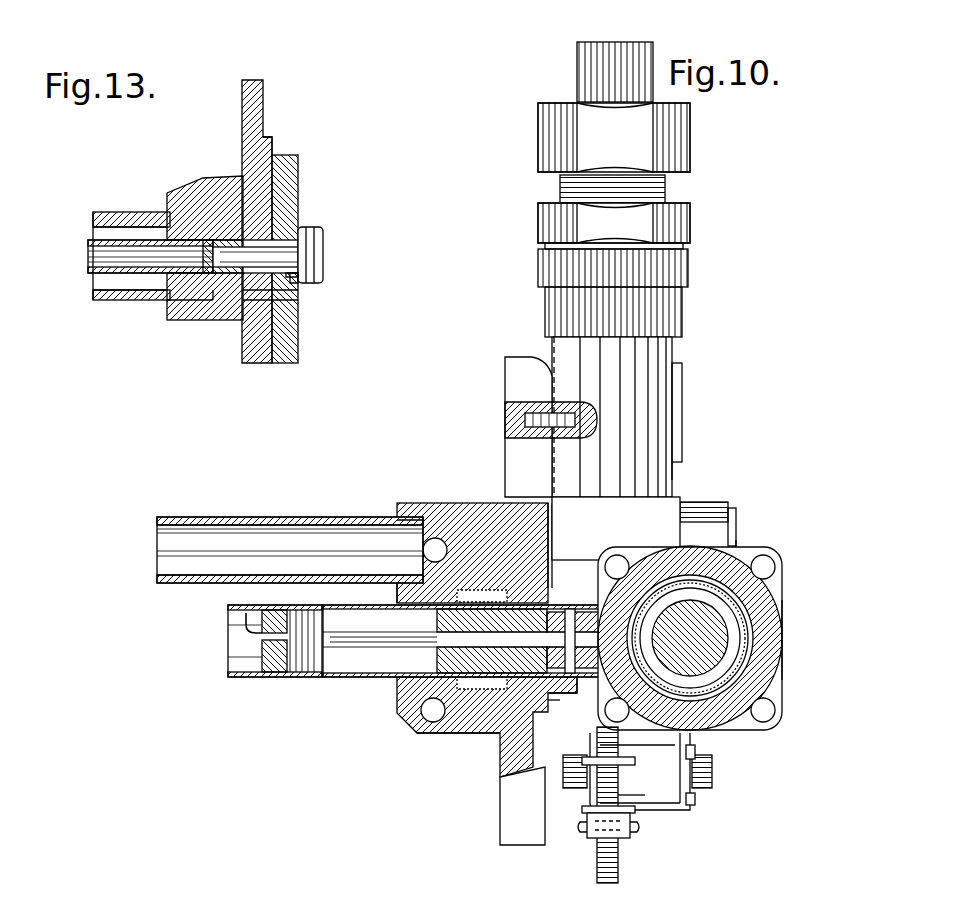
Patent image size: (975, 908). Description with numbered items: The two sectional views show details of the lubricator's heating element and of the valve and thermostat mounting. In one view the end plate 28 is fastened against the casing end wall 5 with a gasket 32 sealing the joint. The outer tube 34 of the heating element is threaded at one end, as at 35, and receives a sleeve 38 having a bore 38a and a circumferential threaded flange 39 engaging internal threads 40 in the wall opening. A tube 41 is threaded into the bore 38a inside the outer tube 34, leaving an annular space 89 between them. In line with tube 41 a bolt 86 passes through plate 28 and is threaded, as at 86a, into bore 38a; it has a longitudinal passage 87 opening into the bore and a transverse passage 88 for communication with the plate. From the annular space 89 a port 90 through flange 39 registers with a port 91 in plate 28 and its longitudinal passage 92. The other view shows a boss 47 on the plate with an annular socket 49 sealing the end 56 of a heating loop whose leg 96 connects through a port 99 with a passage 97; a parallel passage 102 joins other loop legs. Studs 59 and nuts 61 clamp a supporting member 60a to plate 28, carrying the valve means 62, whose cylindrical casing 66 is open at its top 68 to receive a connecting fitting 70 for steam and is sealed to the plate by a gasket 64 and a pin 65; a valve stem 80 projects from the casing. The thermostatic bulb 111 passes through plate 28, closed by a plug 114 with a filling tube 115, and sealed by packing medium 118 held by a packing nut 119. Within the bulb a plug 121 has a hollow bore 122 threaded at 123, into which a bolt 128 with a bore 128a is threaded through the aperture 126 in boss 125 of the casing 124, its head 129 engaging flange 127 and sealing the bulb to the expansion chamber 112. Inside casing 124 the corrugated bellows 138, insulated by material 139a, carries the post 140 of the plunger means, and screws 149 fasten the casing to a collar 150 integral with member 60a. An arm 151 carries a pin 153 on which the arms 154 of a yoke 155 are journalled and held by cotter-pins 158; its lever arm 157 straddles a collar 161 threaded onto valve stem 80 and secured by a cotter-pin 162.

In FIG. 13, the end wall 5 is at (270, 113).
In FIG. 13, the end plate 28 is at (295, 162).
In FIG. 10, the end plate 28 is at (500, 812).
In FIG. 13, the gasket 32 is at (273, 146).
In FIG. 13, the outer tube 34 is at (94, 301).
In FIG. 13, the threaded end 35 is at (166, 302).
In FIG. 13, the sleeve 38 is at (170, 198).
In FIG. 13, the bore 38a is at (190, 226).
In FIG. 13, the circumferential threaded flange 39 is at (273, 222).
In FIG. 13, the internal threads 40 is at (232, 238).
In FIG. 13, the tube 41 is at (90, 242).
In FIG. 13, the bolt 86 is at (314, 260).
In FIG. 13, the threaded portion 86a is at (300, 280).
In FIG. 13, the longitudinal passage 87 is at (200, 321).
In FIG. 13, the transverse passage 88 is at (322, 240).
In FIG. 13, the annular space 89 is at (96, 290).
In FIG. 13, the port 90 is at (226, 321).
In FIG. 13, the port 91 is at (299, 298).
In FIG. 13, the longitudinal passage 92 is at (299, 276).
In FIG. 10, the boss 47 is at (426, 510).
In FIG. 10, the annular socket 49 is at (412, 556).
In FIG. 10, the end of heating tube 56 is at (410, 586).
In FIG. 10, the studs 59 is at (738, 542).
In FIG. 10, the supporting member 60a is at (682, 506).
In FIG. 10, the nuts 61 is at (733, 516).
In FIG. 10, the valve means 62 is at (672, 472).
In FIG. 10, the gasket 64 is at (548, 390).
In FIG. 10, the pin 65 is at (522, 420).
In FIG. 10, the casing 66 is at (645, 376).
In FIG. 10, the top 68 is at (690, 262).
In FIG. 10, the connecting fitting 70 is at (692, 216).
In FIG. 10, the leg 96 is at (240, 530).
In FIG. 10, the passage 97 is at (441, 545).
In FIG. 10, the port 99 is at (362, 522).
In FIG. 10, the passage 102 is at (408, 726).
In FIG. 10, the bulb 111 is at (366, 678).
In FIG. 10, the expansion chamber 112 is at (783, 600).
In FIG. 10, the plug 114 is at (278, 678).
In FIG. 10, the filling tube 115 is at (246, 627).
In FIG. 10, the packing medium 118 is at (446, 735).
In FIG. 10, the packing nut 119 is at (481, 735).
In FIG. 10, the plug 121 is at (440, 650).
In FIG. 10, the hollow bore 122 is at (440, 626).
In FIG. 10, the threaded enlarged end 123 is at (566, 692).
In FIG. 10, the boss 125 is at (620, 602).
In FIG. 10, the aperture 126 is at (590, 602).
In FIG. 10, the flange 127 is at (616, 528).
In FIG. 10, the bolt 128 is at (570, 596).
In FIG. 10, the longitudinal bore 128a is at (582, 700).
In FIG. 10, the head 129 is at (655, 670).
In FIG. 10, the expansible-collapsible element 138 is at (737, 630).
In FIG. 10, the insulating material 139a is at (783, 641).
In FIG. 10, the post 140 is at (712, 660).
In FIG. 10, the screws 149 is at (768, 562).
In FIG. 10, the collar 150 is at (782, 576).
In FIG. 10, the arm 151 is at (690, 746).
In FIG. 10, the casing 124 is at (715, 735).
In FIG. 10, the pin 153 is at (713, 771).
In FIG. 10, the arms 154 is at (700, 797).
In FIG. 10, the yoke 155 is at (660, 822).
In FIG. 10, the lever arm 157 is at (638, 798).
In FIG. 10, the cotter-pins 158 is at (587, 800).
In FIG. 10, the collar 161 is at (631, 832).
In FIG. 10, the cotter-pin 162 is at (582, 830).
In FIG. 10, the valve stem 80 is at (597, 872).